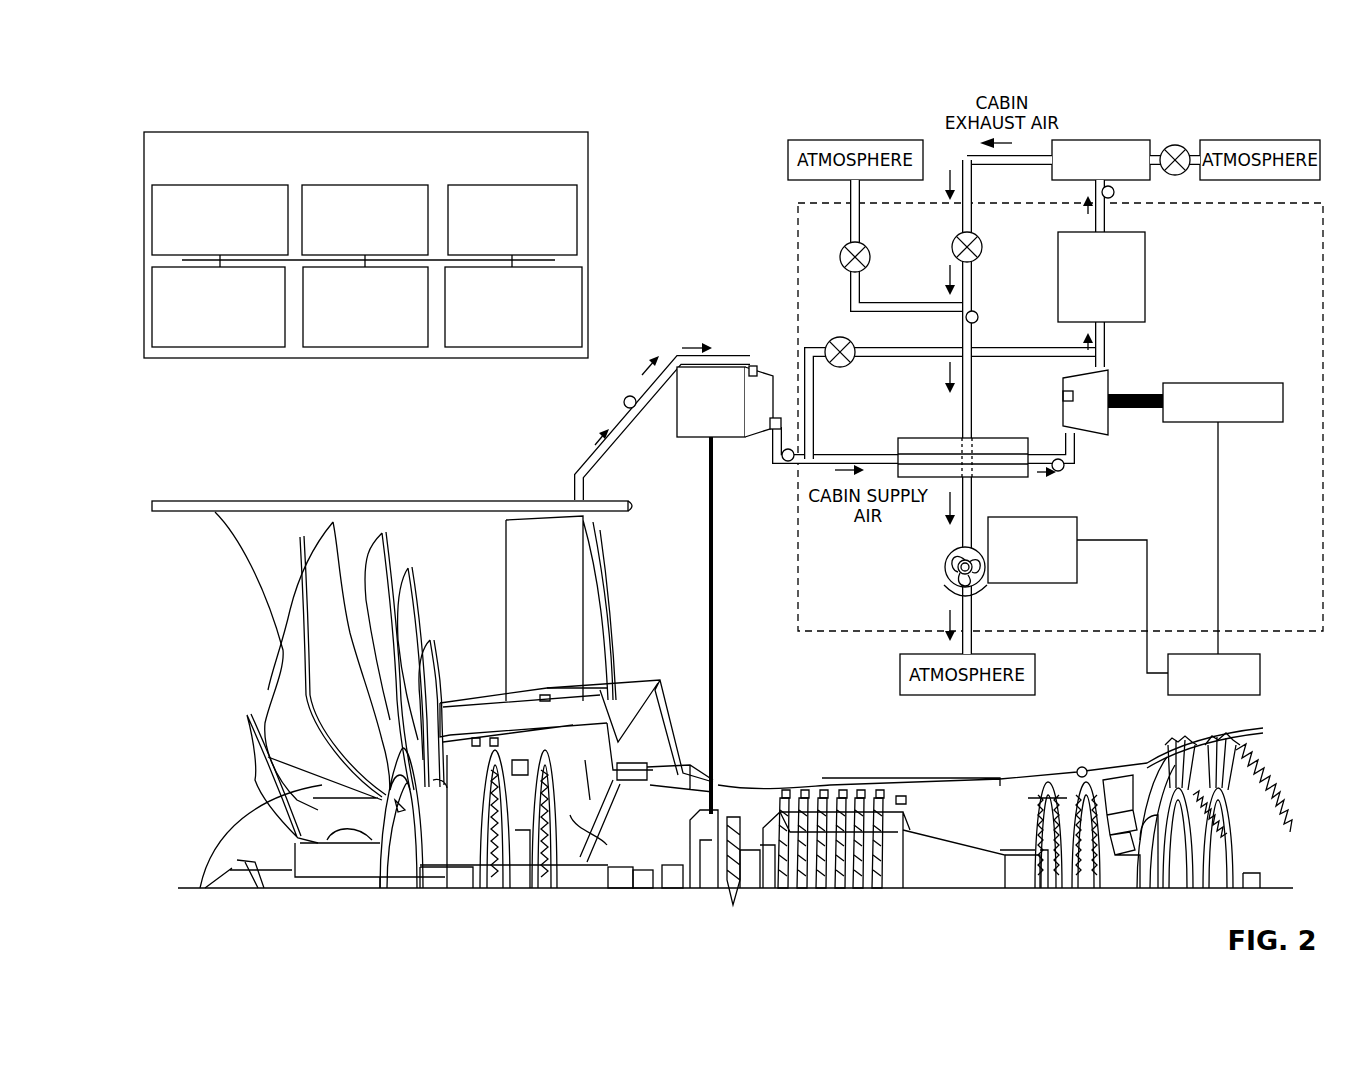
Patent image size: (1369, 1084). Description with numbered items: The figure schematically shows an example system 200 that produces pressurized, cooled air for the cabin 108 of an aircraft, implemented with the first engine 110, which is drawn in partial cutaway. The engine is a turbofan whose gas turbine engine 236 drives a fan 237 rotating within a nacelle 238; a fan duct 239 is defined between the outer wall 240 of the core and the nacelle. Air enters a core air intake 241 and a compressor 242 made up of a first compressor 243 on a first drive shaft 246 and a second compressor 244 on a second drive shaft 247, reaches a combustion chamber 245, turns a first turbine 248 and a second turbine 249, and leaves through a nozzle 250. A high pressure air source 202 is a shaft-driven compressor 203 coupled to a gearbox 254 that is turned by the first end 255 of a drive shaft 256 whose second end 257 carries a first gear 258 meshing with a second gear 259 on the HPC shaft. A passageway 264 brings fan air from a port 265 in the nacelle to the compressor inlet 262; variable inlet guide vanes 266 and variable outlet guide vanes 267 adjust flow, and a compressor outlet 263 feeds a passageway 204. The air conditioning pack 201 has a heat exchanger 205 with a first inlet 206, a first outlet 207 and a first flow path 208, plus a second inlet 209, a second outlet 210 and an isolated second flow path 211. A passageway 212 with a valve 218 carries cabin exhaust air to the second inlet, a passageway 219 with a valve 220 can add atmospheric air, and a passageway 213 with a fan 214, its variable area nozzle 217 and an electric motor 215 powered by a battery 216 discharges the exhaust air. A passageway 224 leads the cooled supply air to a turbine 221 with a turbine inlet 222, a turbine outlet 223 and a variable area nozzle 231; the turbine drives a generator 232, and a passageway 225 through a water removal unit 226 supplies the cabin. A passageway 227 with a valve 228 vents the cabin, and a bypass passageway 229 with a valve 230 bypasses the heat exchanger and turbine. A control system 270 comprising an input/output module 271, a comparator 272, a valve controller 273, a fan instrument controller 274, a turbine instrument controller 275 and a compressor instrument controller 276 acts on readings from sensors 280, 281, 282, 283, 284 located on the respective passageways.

The system 200 is at (258, 74).
The first engine 110 is at (256, 485).
The cabin 108 is at (1093, 140).
The air conditioning pack 201 is at (1060, 417).
The high pressure air source 202 is at (681, 321).
The shaft-driven compressor 203 is at (768, 376).
The passageway 204 is at (788, 466).
The heat exchanger 205 is at (897, 440).
The first inlet 206 is at (868, 455).
The first outlet 207 is at (1055, 455).
The first flow path 208 is at (938, 455).
The second inlet 209 is at (972, 430).
The second outlet 210 is at (975, 482).
The second flow path 211 is at (958, 478).
The passageway 212 is at (972, 280).
The passageway 213 is at (945, 552).
The fan 214 is at (944, 572).
The electric motor 215 is at (978, 588).
The battery 216 is at (1232, 697).
The variable area nozzle 217 is at (947, 590).
The valve 218 is at (954, 240).
The passageway 219 is at (850, 228).
The valve 220 is at (842, 255).
The turbine 221 is at (1110, 385).
The turbine inlet 222 is at (1064, 465).
The turbine outlet 223 is at (1104, 370).
The passageway 224 is at (1082, 440).
The passageway 225 is at (1106, 226).
The water removal unit 226 is at (1072, 232).
The passageway 227 is at (1202, 140).
The valve 228 is at (1179, 144).
The bypass passageway 229 is at (840, 337).
The valve 230 is at (848, 352).
The variable area nozzle 231 is at (954, 399).
The generator 232 is at (1207, 383).
The gas turbine engine 236 is at (840, 738).
The fan 237 is at (277, 693).
The nacelle 238 is at (320, 501).
The fan duct 239 is at (418, 520).
The outer wall 240 is at (475, 690).
The core air intake 241 is at (445, 737).
The compressor 242 is at (601, 924).
The first compressor 243 is at (492, 893).
The second compressor 244 is at (814, 893).
The combustion chamber 245 is at (1010, 782).
The first drive shaft 246 is at (640, 890).
The second drive shaft 247 is at (1008, 893).
The first turbine 248 is at (1203, 893).
The second turbine 249 is at (1096, 893).
The nozzle 250 is at (1275, 796).
The gearbox 254 is at (683, 440).
The first end 255 is at (700, 440).
The drive shaft 256 is at (705, 570).
The second end 257 is at (726, 815).
The first gear 258 is at (742, 818).
The second gear 259 is at (742, 820).
The compressor inlet 262 is at (752, 358).
The compressor outlet 263 is at (772, 455).
The passageway 264 is at (607, 414).
The port 265 is at (560, 500).
The variable inlet guide vanes 266 is at (750, 365).
The variable outlet guide vanes 267 is at (776, 416).
The control system 270 is at (588, 136).
The input/output module 271 is at (221, 184).
The comparator 272 is at (365, 184).
The valve controller 273 is at (513, 184).
The fan instrument controller 274 is at (222, 350).
The turbine instrument controller 275 is at (362, 350).
The compressor instrument controller 276 is at (476, 350).
The sensor 280 is at (630, 395).
The sensor 281 is at (793, 450).
The sensor 282 is at (1058, 472).
The sensor 283 is at (1114, 192).
The sensor 284 is at (978, 318).